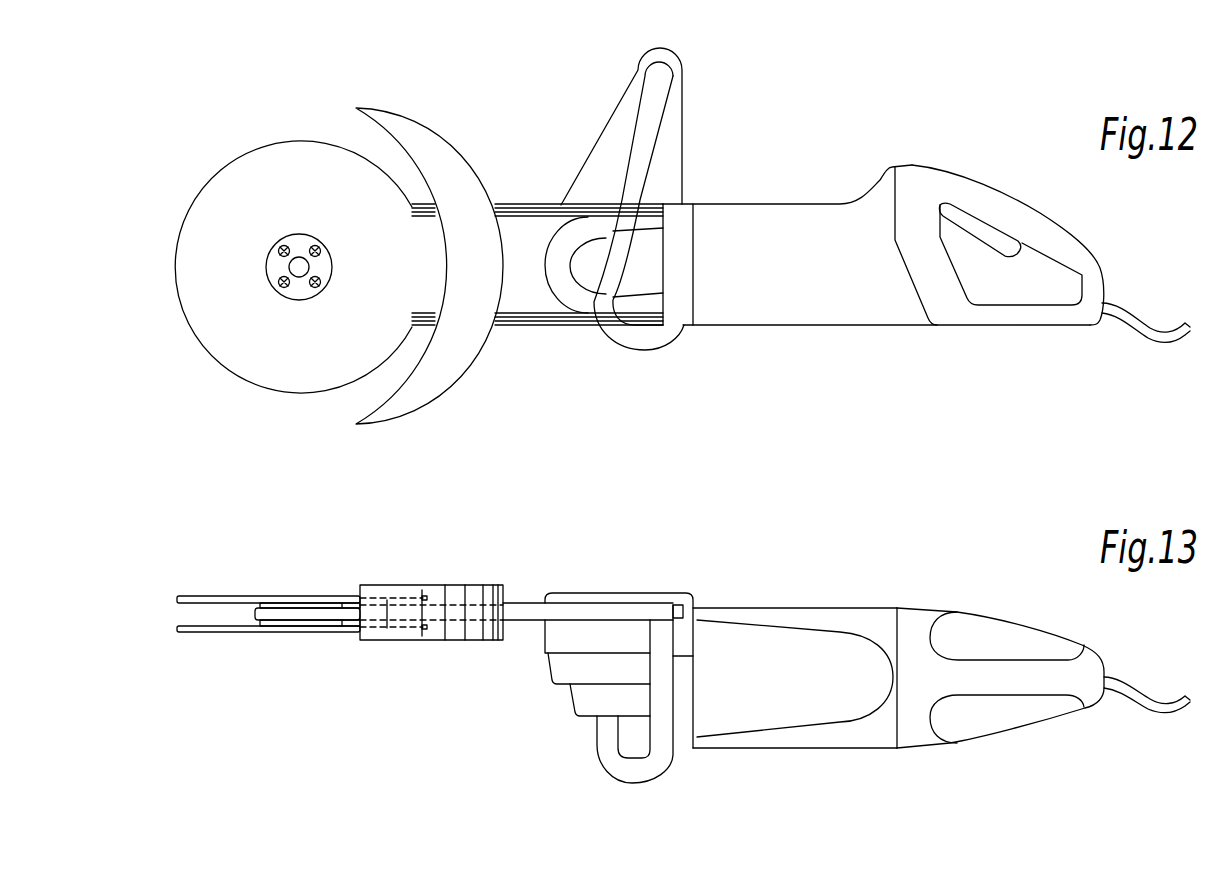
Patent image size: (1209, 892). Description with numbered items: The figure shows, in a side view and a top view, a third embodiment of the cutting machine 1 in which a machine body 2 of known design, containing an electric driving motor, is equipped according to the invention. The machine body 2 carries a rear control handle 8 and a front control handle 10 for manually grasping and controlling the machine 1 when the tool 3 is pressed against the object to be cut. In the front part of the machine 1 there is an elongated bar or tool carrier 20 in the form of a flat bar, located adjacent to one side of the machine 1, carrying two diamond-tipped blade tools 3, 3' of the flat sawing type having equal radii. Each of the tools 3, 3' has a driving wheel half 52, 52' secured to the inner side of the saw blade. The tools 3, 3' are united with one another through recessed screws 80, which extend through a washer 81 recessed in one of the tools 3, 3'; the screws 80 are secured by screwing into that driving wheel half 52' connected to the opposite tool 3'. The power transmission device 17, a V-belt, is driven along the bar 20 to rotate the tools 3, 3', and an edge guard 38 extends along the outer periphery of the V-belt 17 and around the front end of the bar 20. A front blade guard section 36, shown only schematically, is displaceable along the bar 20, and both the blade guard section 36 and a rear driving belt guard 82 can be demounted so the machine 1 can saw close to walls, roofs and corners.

In FIG. 12, the machine 1 is at (770, 157).
In FIG. 13, the machine 1 is at (845, 776).
In FIG. 12, the machine body 2 is at (822, 217).
In FIG. 13, the machine body 2 is at (758, 712).
In FIG. 12, the tool 3 is at (293, 243).
In FIG. 13, the tool 3 is at (268, 662).
In FIG. 13, the tool 3' is at (268, 564).
In FIG. 12, the rear control handle 8 is at (987, 202).
In FIG. 13, the rear control handle 8 is at (1020, 674).
In FIG. 12, the front control handle 10 is at (653, 107).
In FIG. 13, the front control handle 10 is at (653, 764).
In FIG. 12, the power transmission device 17 is at (540, 210).
In FIG. 13, the power transmission device 17 is at (530, 621).
In FIG. 12, the bar 20 is at (524, 297).
In FIG. 12, the blade guard section 36 is at (414, 131).
In FIG. 13, the blade guard section 36 is at (455, 590).
In FIG. 12, the edge guard 38 is at (514, 205).
In FIG. 13, the edge guard 38 is at (530, 621).
In FIG. 13, the driving wheel half 52 is at (307, 651).
In FIG. 13, the driving wheel half 52' is at (310, 567).
In FIG. 12, the recessed screws 80 is at (283, 249).
In FIG. 12, the washer 81 is at (268, 269).
In FIG. 13, the rear driving belt guard 82 is at (618, 593).